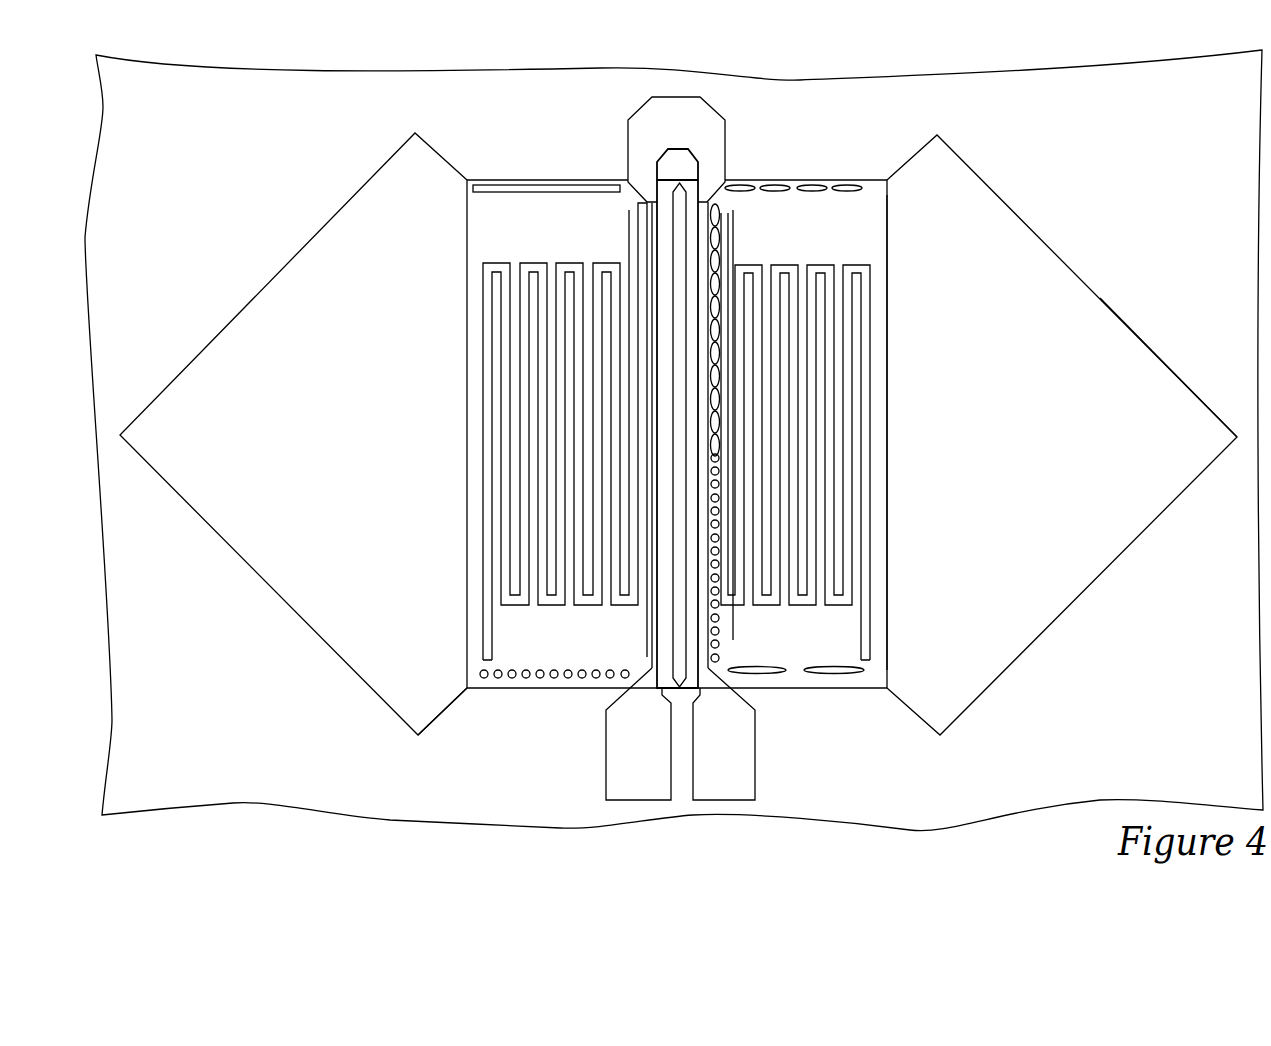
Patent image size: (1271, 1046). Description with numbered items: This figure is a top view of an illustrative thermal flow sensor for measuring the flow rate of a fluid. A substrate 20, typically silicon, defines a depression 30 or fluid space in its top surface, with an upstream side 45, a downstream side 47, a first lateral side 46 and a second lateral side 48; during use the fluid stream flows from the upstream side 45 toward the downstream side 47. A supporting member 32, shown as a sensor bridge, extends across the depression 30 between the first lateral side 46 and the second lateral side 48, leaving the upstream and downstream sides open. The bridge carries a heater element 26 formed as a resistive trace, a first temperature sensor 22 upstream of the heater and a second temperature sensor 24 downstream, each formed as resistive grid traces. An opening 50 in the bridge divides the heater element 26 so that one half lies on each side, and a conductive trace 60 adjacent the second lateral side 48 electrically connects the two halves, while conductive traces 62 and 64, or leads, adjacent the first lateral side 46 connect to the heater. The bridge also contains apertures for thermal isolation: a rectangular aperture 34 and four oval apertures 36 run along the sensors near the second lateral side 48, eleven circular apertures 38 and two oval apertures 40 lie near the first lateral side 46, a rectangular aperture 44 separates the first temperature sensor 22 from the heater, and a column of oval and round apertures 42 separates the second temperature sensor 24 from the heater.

The substrate 20 is at (1130, 225).
The first temperature sensor 22 is at (572, 263).
The second temperature sensor 24 is at (783, 265).
The heater element 26 is at (678, 202).
The depression 30 is at (948, 577).
The supporting member 32 is at (873, 210).
The aperture 34 is at (548, 183).
The apertures 36 is at (810, 185).
The apertures 38 is at (568, 677).
The apertures 40 is at (830, 673).
The apertures 42 is at (722, 360).
The aperture 44 is at (641, 415).
The upstream side 45 is at (322, 283).
The first lateral side 46 is at (497, 706).
The downstream side 47 is at (1104, 347).
The second lateral side 48 is at (607, 163).
The opening 50 is at (708, 203).
The conductive trace 60 is at (668, 95).
The conductive trace 62 is at (610, 788).
The conductive trace 64 is at (752, 790).